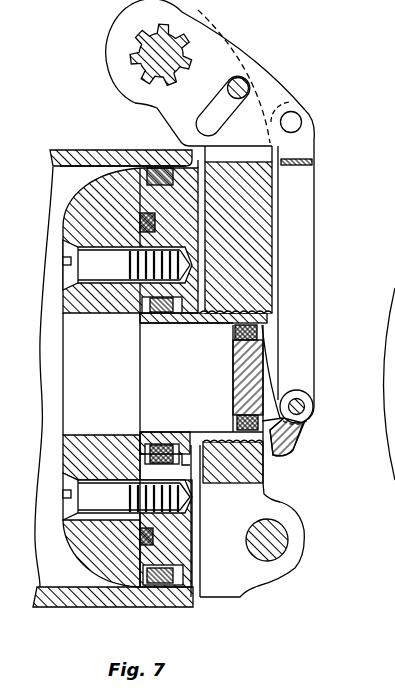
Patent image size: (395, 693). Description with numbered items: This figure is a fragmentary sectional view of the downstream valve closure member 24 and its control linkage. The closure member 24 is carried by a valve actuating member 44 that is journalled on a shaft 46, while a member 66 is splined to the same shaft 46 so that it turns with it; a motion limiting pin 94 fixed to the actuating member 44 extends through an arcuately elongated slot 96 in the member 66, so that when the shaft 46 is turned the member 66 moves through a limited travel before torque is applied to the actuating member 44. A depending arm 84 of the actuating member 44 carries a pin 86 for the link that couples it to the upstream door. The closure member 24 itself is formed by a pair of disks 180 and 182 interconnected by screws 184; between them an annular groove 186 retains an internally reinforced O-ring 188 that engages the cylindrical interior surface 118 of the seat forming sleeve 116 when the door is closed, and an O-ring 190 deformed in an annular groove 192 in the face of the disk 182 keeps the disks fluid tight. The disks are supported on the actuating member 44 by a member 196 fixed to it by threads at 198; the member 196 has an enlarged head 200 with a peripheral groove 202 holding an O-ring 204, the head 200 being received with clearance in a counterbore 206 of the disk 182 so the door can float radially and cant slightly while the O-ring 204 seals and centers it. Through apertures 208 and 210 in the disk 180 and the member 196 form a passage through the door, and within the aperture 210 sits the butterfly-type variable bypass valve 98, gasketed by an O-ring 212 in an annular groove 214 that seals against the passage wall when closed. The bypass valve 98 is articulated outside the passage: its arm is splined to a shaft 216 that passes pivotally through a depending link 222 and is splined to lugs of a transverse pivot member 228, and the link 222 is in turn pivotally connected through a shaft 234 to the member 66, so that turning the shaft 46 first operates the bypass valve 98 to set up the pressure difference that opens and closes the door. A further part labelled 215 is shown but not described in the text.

The downstream valve closure member 24 is at (40, 405).
The valve actuating member 44 is at (265, 247).
The shaft 46 is at (130, 65).
The member 66 is at (273, 81).
The depending arm 84 is at (245, 585).
The pin 86 is at (281, 551).
The motion limiting pin 94 is at (246, 78).
The arcuately elongated slot 96 is at (215, 106).
The variable bypass valve 98 is at (240, 370).
The sleeve 116 is at (97, 150).
The cylindrical interior surface 118 is at (88, 167).
The disk 180 is at (118, 549).
The disk 182 is at (205, 551).
The screws 184 is at (63, 268).
The annular groove 186 is at (193, 570).
The internally reinforced O-ring 188 is at (193, 588).
The O-ring 190 is at (140, 222).
The annular groove 192 is at (163, 208).
The member 196 is at (192, 432).
The threads 198 is at (262, 311).
The enlarged head 200 is at (138, 434).
The peripheral groove 202 is at (182, 433).
The O-ring 204 is at (152, 465).
The counterbore 206 is at (140, 462).
The through aperture 208 is at (77, 322).
The through aperture 210 is at (174, 328).
The O-ring 212 is at (236, 332).
The annular groove 214 is at (237, 400).
The lever 215 is at (266, 376).
The shaft 216 is at (306, 408).
The depending link 222 is at (317, 214).
The pivot member 228 is at (285, 452).
The shaft 234 is at (301, 118).